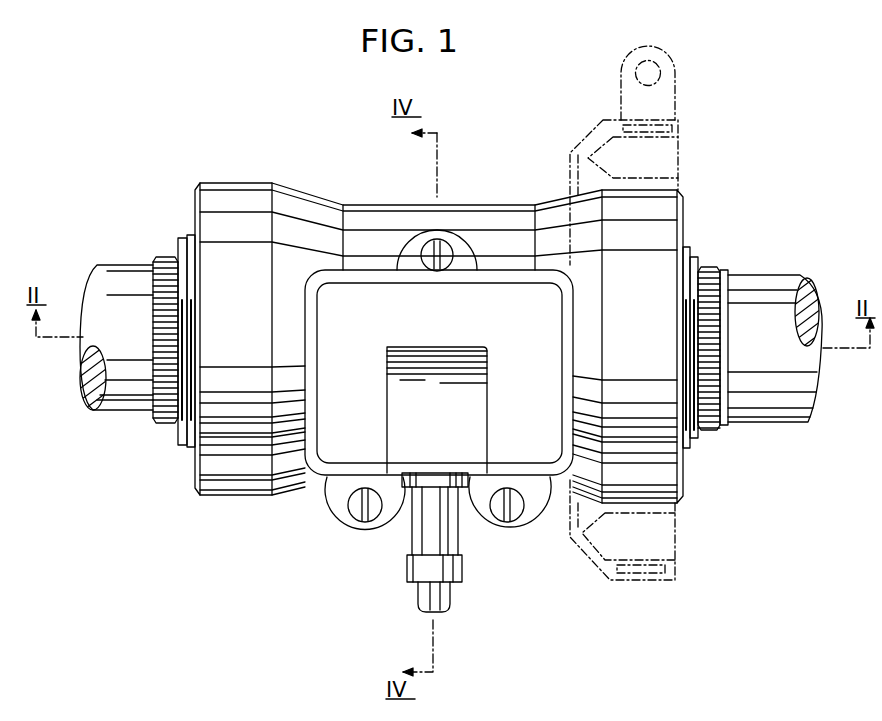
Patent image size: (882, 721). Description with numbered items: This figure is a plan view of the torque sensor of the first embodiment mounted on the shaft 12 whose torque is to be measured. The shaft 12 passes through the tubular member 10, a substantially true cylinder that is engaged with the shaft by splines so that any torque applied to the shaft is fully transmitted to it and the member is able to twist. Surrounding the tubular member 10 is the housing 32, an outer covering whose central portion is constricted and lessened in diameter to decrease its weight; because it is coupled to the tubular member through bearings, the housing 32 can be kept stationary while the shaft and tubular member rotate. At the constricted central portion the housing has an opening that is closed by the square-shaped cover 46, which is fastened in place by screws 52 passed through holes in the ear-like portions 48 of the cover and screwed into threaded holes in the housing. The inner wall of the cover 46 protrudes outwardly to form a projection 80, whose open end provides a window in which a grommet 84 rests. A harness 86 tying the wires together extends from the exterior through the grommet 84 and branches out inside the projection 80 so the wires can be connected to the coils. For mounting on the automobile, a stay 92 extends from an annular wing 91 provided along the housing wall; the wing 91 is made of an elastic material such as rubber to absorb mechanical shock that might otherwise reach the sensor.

The tubular member 10 is at (693, 442).
The shaft 12 is at (745, 422).
The housing 32 is at (660, 493).
The cover 46 is at (322, 498).
The ear-like portions 48 is at (460, 243).
The screws 52 is at (427, 263).
The projection 80 is at (387, 423).
The grommet 84 is at (405, 576).
The harness 86 is at (452, 604).
The annular wing 91 is at (685, 90).
The stay 92 is at (685, 145).